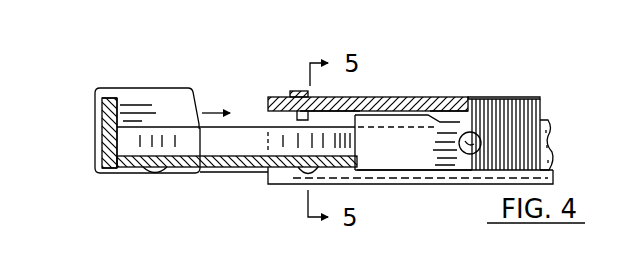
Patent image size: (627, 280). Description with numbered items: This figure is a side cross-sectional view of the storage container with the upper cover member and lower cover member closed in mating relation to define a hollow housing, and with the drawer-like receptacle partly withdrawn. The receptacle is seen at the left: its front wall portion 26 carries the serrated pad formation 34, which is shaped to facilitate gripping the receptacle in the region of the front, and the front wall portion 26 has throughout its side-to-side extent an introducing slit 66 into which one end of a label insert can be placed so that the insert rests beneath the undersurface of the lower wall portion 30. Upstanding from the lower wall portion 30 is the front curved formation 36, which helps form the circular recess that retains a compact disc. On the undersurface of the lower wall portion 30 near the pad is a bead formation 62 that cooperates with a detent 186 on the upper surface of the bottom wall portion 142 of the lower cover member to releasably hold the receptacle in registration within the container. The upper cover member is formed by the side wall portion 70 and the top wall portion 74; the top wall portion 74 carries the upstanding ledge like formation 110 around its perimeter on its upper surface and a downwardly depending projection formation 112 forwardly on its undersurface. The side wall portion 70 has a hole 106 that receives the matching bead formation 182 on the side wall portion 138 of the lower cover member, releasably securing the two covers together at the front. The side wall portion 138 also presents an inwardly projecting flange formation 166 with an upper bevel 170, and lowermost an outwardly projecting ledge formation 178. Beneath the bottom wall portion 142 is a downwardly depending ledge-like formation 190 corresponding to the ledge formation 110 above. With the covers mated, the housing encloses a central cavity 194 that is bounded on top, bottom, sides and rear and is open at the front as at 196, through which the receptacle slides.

The front wall portion 26 is at (93, 125).
The lower wall portion 30 is at (212, 165).
The serrated pad formation 34 is at (137, 95).
The front curved formation 36 is at (265, 116).
The bead formation 62 is at (150, 173).
The introducing slit 66 is at (110, 172).
The side wall portion 70 is at (520, 128).
The top wall portion 74 is at (445, 102).
The hole 106 is at (476, 131).
The upstanding ledge like formation 110 is at (297, 94).
The projection formation 112 is at (303, 92).
The side wall portion 138 is at (423, 155).
The bottom wall portion 142 is at (338, 176).
The flange formation 166 is at (392, 120).
The upper bevel 170 is at (432, 111).
The ledge formation 178 is at (552, 170).
The bead formation 182 is at (464, 154).
The detent 186 is at (307, 176).
The downwardly depending ledge-like formation 190 is at (272, 183).
The central cavity 194 is at (333, 118).
The open front 196 is at (247, 140).